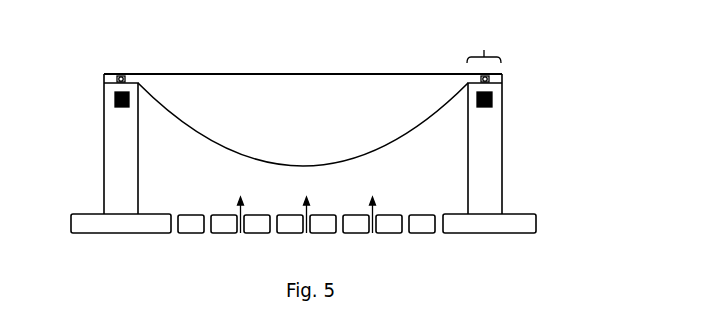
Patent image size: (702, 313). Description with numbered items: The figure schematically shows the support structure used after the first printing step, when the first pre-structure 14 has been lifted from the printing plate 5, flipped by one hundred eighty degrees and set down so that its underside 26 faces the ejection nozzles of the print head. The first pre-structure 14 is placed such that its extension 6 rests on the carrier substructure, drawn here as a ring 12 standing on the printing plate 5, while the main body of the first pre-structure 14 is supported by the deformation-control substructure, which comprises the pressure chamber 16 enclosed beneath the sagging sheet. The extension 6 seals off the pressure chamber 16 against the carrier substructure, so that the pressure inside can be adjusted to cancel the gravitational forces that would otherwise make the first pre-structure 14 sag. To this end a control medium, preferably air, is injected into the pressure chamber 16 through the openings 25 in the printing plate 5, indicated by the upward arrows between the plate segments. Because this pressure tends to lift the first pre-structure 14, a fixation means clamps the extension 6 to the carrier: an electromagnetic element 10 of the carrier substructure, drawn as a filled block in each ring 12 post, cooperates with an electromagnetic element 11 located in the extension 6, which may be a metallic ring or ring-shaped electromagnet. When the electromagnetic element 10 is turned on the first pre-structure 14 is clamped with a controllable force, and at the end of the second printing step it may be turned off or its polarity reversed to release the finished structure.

The printing plate 5 is at (93, 222).
The extension 6 is at (484, 34).
The electromagnetic element of the carrier substructure 10 is at (108, 94).
The electromagnetic element of the first pre-structure 11 is at (118, 74).
The ring 12 is at (107, 155).
The first pre-structure 14 is at (202, 116).
The pressure chamber 16 is at (445, 176).
The openings in printing plate 25 is at (174, 222).
The at least one side of the first pre-structure 26 is at (258, 73).